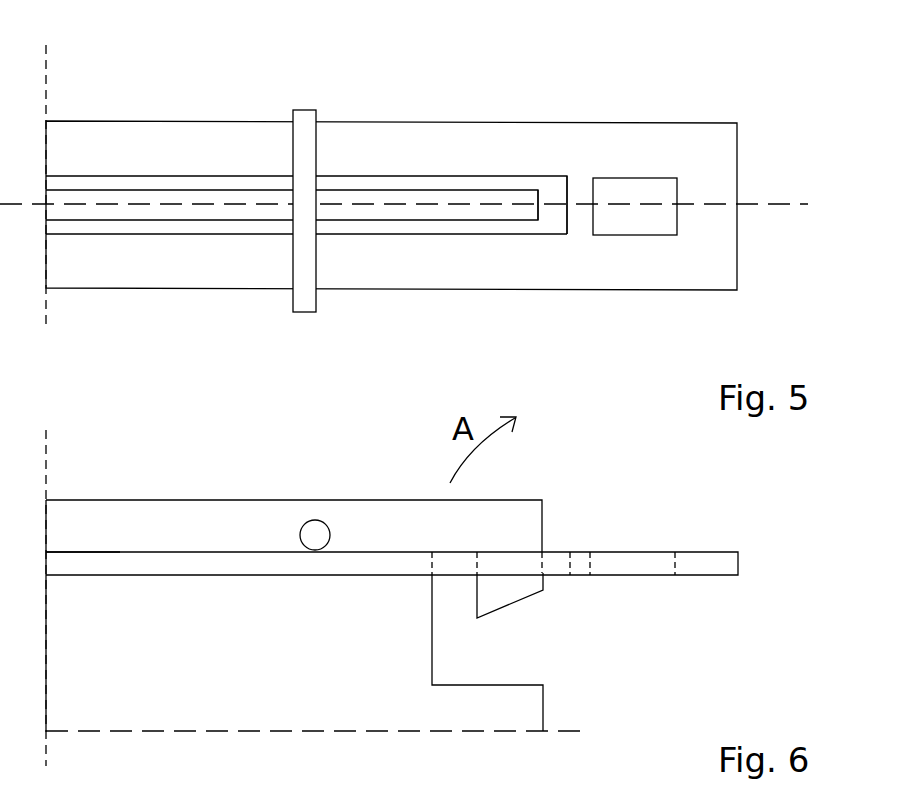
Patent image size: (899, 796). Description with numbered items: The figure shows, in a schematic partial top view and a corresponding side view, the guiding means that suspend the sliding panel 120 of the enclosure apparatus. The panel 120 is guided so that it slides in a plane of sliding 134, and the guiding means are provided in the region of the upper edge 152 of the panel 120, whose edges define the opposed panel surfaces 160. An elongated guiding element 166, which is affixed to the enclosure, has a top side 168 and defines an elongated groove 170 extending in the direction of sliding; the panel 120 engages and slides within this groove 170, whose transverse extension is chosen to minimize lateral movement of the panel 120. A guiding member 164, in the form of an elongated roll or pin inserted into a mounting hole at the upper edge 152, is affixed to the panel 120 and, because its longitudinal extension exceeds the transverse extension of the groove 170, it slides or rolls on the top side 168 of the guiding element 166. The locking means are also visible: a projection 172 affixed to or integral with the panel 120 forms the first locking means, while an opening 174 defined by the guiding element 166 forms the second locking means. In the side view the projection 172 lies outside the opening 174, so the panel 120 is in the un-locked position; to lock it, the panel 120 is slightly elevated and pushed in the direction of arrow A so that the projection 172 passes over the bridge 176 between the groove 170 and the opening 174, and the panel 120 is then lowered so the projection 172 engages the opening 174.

In FIG. 5, the panel 120 is at (125, 188).
In FIG. 6, the panel 120 is at (250, 520).
In FIG. 5, the plane of sliding 134 is at (760, 205).
In FIG. 5, the upper edge 152 is at (195, 205).
In FIG. 6, the panel surface 160 is at (132, 665).
In FIG. 5, the guiding member 164 is at (300, 132).
In FIG. 6, the guiding member 164 is at (313, 535).
In FIG. 5, the guiding element 166 is at (510, 270).
In FIG. 6, the guiding element 166 is at (178, 548).
In FIG. 5, the top side 168 is at (462, 259).
In FIG. 6, the top side 168 is at (100, 552).
In FIG. 5, the groove 170 is at (548, 195).
In FIG. 6, the projection 172 is at (508, 590).
In FIG. 5, the opening 174 is at (630, 200).
In FIG. 6, the opening 174 is at (647, 560).
In FIG. 5, the bridge 176 is at (578, 218).
In FIG. 6, the bridge 176 is at (580, 552).